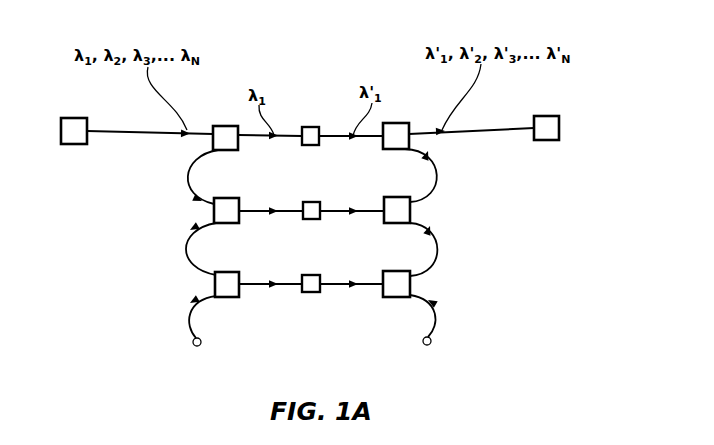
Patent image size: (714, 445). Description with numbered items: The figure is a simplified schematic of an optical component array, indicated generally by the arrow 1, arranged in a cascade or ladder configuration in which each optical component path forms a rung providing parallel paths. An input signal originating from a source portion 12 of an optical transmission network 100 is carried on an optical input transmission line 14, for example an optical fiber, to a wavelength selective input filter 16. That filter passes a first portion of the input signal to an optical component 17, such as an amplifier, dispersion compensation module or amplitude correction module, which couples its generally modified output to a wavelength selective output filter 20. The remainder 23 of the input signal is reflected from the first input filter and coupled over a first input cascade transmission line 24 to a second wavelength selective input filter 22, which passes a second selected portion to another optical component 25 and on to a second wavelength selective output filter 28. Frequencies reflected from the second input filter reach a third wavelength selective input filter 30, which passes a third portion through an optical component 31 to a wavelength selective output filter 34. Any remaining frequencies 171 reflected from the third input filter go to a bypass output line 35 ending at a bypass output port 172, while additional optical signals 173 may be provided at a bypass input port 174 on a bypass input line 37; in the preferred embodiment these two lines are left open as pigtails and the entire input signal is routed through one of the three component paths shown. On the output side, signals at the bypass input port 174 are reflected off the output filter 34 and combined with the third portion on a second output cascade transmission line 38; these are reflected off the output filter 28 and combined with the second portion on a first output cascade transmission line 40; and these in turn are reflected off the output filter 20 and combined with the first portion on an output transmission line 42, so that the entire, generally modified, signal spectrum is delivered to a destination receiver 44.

The optical transmission system 1 is at (505, 246).
The optical transmission network 100 is at (318, 60).
The source (transmission) portion 12 is at (70, 118).
The optical input transmission line 14 is at (133, 131).
The wavelength selective input filter 16 is at (225, 126).
The optical component 17 is at (310, 127).
The wavelength selective output filter 20 is at (392, 123).
The wavelength selective input filter 22 is at (225, 198).
The remainder of the input signal 23 is at (212, 205).
The first input cascade transmission line 24 is at (186, 174).
The optical component 25 is at (310, 202).
The second wavelength selective output filter 28 is at (396, 197).
The wavelength selective input filter 30 is at (226, 272).
The optical component 31 is at (311, 275).
The wavelength selective output filter 34 is at (396, 271).
The bypass output line 35 is at (187, 327).
The bypass input line 37 is at (439, 322).
The second output cascade transmission line 38 is at (438, 247).
The first output cascade transmission line 40 is at (438, 173).
The output transmission line 42 is at (496, 128).
The destination (receiver) 44 is at (547, 116).
The remainder of the frequencies 171 is at (192, 302).
The bypass output port 172 is at (195, 346).
The additional optical signals 173 is at (430, 300).
The bypass input port 174 is at (430, 346).